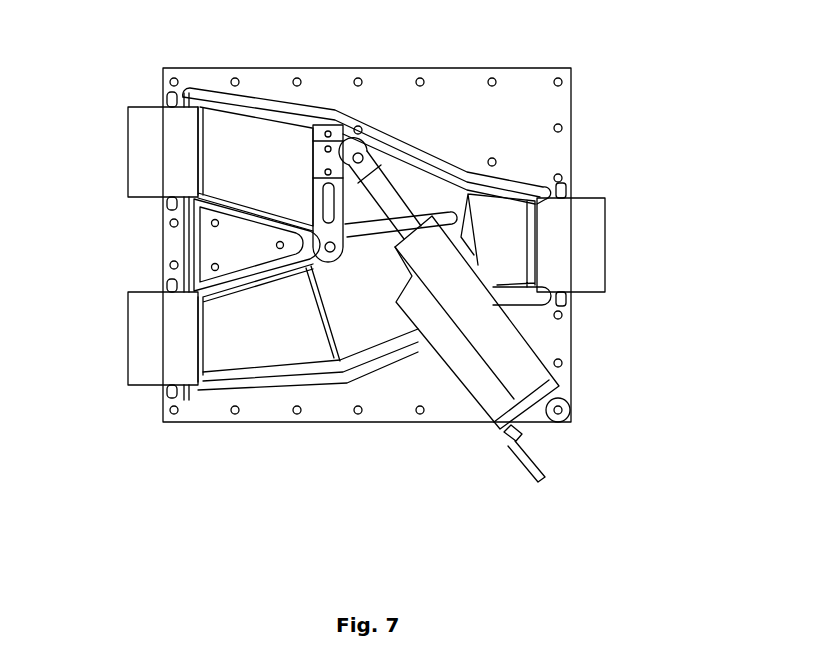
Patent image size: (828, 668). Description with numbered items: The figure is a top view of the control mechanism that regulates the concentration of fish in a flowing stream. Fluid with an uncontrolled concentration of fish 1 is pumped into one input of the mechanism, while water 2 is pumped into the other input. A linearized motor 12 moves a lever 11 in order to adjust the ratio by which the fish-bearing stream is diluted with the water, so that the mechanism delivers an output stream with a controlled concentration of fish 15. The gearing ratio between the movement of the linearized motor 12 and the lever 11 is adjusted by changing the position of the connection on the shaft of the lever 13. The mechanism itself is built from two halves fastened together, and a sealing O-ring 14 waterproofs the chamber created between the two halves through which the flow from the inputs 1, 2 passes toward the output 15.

The input of fluid with uncontrolled concentration of fish 1 is at (147, 116).
The input of water 2 is at (138, 315).
The lever 11 is at (365, 240).
The linearized motor 12 is at (533, 377).
The shaft of the lever 13 is at (345, 137).
The sealing O-ring 14 is at (267, 390).
The output of stream with controlled concentration of fish 15 is at (598, 247).